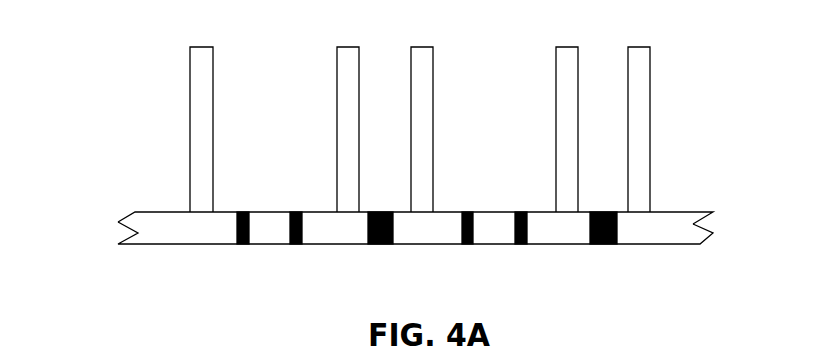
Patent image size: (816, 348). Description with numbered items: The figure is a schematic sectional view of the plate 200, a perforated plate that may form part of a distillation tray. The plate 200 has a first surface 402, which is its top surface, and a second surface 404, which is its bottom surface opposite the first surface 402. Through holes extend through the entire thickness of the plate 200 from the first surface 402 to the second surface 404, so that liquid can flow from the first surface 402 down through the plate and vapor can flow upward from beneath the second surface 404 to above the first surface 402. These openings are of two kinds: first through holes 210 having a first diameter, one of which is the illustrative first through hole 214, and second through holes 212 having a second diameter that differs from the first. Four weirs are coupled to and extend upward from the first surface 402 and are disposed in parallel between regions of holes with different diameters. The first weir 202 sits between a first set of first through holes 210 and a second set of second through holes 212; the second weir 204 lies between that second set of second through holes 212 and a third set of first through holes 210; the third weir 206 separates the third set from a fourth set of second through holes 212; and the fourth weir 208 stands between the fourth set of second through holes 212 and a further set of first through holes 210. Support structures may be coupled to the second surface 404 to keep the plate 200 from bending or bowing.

The plate 200 is at (361, 154).
The first weir 202 is at (343, 47).
The second weir 204 is at (432, 47).
The third weir 206 is at (558, 47).
The fourth weir 208 is at (640, 47).
The first through holes 210 is at (246, 266).
The second through holes 212 is at (374, 266).
The first through hole 214 is at (602, 266).
The first surface 402 is at (165, 212).
The second surface 404 is at (165, 244).